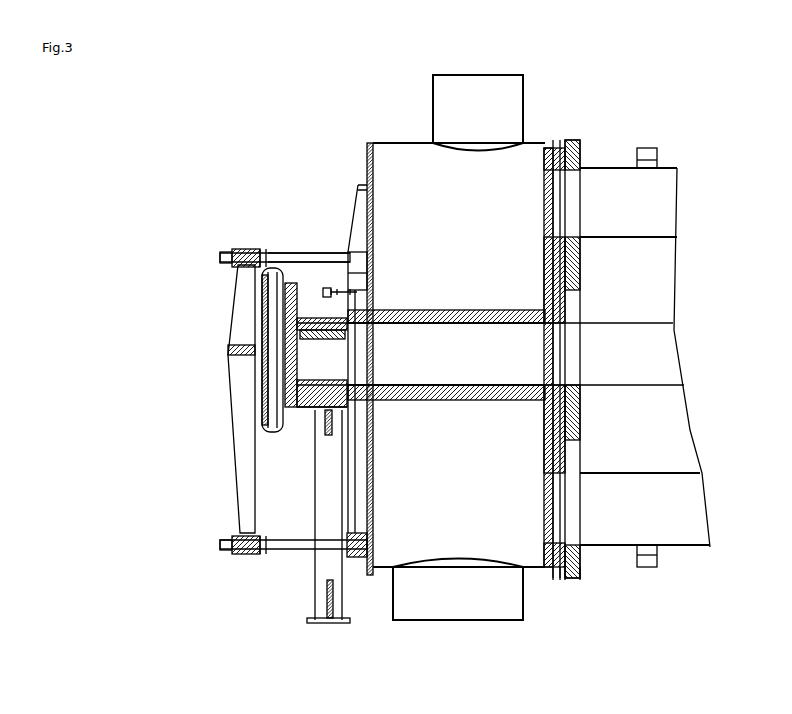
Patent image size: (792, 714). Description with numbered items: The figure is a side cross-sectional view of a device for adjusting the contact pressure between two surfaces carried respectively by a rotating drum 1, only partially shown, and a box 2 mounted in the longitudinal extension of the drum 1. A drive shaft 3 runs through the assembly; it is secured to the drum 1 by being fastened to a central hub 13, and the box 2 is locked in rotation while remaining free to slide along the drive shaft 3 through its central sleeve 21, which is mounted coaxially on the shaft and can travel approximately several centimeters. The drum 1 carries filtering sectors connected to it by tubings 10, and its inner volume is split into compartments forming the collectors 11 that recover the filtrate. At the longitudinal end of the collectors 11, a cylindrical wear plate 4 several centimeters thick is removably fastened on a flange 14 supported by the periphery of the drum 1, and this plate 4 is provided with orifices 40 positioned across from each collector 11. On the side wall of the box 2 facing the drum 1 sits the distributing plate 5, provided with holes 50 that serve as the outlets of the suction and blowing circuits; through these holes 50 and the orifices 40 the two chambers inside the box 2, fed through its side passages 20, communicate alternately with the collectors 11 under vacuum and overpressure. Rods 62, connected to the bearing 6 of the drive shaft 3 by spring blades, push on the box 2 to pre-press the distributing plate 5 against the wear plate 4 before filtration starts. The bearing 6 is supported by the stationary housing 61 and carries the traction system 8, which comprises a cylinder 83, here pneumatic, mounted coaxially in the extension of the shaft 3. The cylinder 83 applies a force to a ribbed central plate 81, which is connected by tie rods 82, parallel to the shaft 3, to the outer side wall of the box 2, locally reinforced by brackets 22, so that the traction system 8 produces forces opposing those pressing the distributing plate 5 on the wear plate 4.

The rotating drum 1 is at (640, 280).
The box 2 is at (452, 478).
The drive shaft 3 is at (660, 382).
The wear plate 4 is at (570, 580).
The distributing plate 5 is at (555, 580).
The bearing 6 is at (301, 318).
The traction system 8 is at (266, 402).
The tubings 10 is at (647, 160).
The collectors 11 is at (651, 520).
The central hub 13 is at (593, 237).
The flange 14 is at (584, 566).
The side passages 20 is at (433, 99).
The central sleeve 21 is at (455, 310).
The brackets 22 is at (355, 208).
The orifices 40 is at (573, 180).
The holes 50 is at (560, 205).
The stationary housing 61 is at (312, 540).
The rods 62 is at (357, 292).
The ribbed central plate 81 is at (240, 332).
The tie rods 82 is at (300, 255).
The cylinder 83 is at (274, 258).